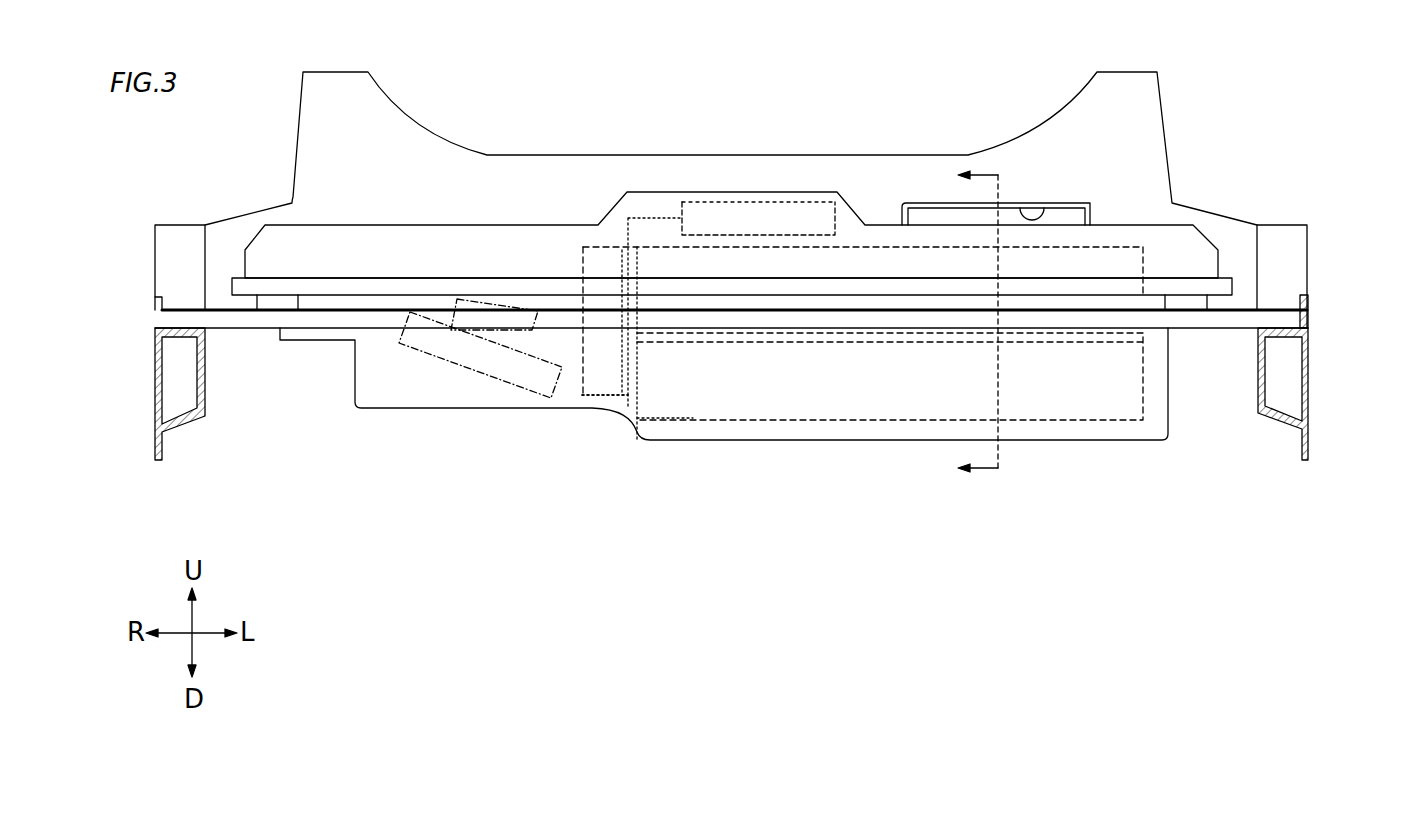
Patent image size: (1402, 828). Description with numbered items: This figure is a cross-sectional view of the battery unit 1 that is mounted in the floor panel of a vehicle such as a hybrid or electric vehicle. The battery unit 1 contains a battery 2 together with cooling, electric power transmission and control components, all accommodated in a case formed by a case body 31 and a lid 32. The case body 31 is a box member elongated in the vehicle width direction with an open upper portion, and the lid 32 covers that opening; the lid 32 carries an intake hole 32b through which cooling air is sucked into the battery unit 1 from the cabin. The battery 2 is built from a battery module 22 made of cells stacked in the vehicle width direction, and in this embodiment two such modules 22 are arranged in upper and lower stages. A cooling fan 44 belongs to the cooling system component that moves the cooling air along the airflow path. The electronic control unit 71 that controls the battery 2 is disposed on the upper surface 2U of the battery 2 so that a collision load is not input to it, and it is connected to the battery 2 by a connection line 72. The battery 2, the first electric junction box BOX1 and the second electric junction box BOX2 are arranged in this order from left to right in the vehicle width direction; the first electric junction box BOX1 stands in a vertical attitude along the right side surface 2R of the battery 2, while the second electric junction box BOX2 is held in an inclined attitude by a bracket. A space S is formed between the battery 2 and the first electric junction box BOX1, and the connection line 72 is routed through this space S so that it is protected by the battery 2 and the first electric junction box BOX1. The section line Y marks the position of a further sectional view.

The battery unit 1 is at (410, 226).
The battery 2 is at (1357, 68).
The battery module 22 is at (1143, 263).
The case body 31 is at (1088, 440).
The lid 32 is at (868, 224).
The intake hole 32b is at (1022, 207).
The cooling fan 44 is at (472, 373).
The electronic control unit 71 is at (790, 202).
The connection line 72 is at (650, 217).
The upper surface of the battery 2U is at (660, 247).
The right side surface of the battery 2R is at (617, 415).
The space S is at (590, 397).
The first electric junction box BOX1 is at (593, 403).
The second electric junction box BOX2 is at (453, 316).
The section line Y is at (967, 322).